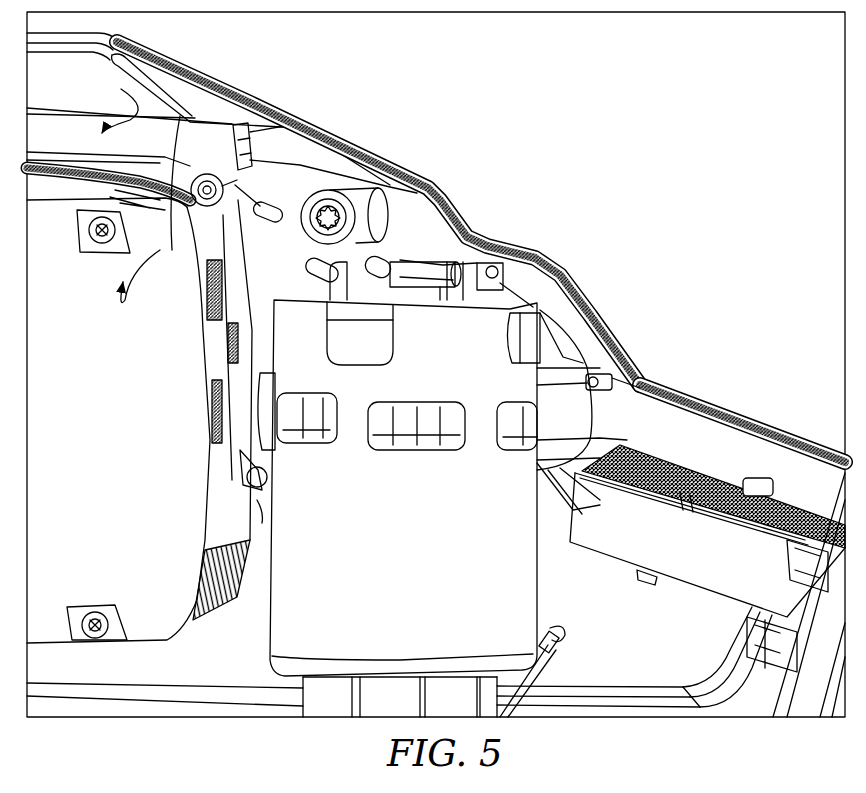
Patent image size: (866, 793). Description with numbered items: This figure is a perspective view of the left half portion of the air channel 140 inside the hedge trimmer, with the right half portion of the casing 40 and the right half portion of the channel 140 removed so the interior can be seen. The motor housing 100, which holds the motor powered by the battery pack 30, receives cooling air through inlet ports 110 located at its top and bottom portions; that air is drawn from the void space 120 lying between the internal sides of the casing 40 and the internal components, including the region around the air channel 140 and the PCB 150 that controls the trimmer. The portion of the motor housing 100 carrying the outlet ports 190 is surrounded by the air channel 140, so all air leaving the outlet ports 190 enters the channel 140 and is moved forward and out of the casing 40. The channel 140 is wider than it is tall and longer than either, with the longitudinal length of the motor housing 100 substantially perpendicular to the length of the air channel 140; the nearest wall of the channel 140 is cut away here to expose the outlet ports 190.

The battery pack 30 is at (198, 102).
The casing 40 is at (375, 147).
The motor housing 100 is at (453, 513).
The inlet ports 110 is at (353, 343).
The void space 120 is at (158, 103).
The air channel 140 is at (713, 423).
The PCB 150 is at (723, 568).
The outlet ports 190 is at (443, 437).